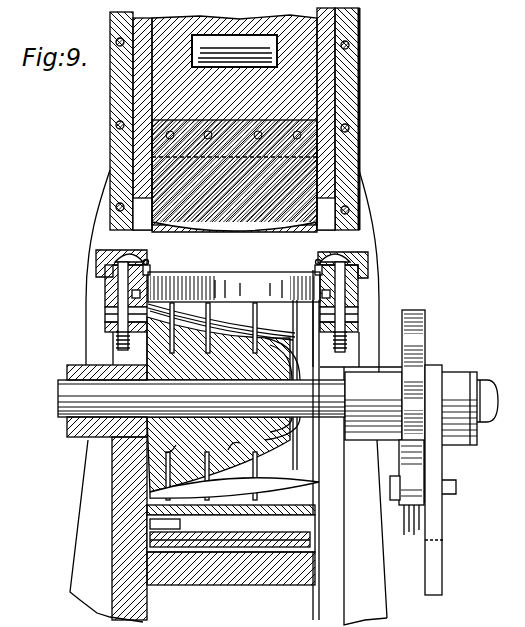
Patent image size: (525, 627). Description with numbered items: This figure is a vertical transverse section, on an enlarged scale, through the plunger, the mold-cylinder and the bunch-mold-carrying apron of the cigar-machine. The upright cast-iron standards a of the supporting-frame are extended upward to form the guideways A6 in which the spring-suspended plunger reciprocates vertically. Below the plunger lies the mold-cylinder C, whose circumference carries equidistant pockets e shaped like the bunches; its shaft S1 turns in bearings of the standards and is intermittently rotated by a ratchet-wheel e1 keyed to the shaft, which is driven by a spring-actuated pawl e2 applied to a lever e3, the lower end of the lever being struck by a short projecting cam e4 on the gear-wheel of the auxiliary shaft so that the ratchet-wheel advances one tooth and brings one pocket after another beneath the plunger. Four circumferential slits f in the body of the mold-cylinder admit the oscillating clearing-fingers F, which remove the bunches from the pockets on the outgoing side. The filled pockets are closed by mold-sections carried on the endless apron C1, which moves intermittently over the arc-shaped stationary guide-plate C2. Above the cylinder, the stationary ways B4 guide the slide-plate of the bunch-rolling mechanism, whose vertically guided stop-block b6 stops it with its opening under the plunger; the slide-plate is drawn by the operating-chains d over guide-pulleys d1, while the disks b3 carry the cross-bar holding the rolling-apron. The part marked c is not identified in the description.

The guideways A6 is at (110, 134).
The clearing-fingers F is at (234, 175).
The stationary ways B4 is at (96, 264).
The guide-pulleys d1 is at (116, 346).
The disks b3 is at (150, 268).
The stop-block b6 is at (244, 288).
The pockets e is at (213, 325).
The mold-cylinder C is at (223, 400).
The circumferential slits f is at (170, 440).
The core slot c is at (234, 444).
The shaft S1 is at (70, 400).
The operating-chains d is at (340, 527).
The ratchet-wheel e1 is at (440, 456).
The spring-actuated pawl e2 is at (424, 483).
The lever e3 is at (446, 480).
The standards a is at (112, 512).
The stationary guide-plate C2 is at (112, 545).
The endless apron C1 is at (147, 518).
The cam e4 is at (225, 540).